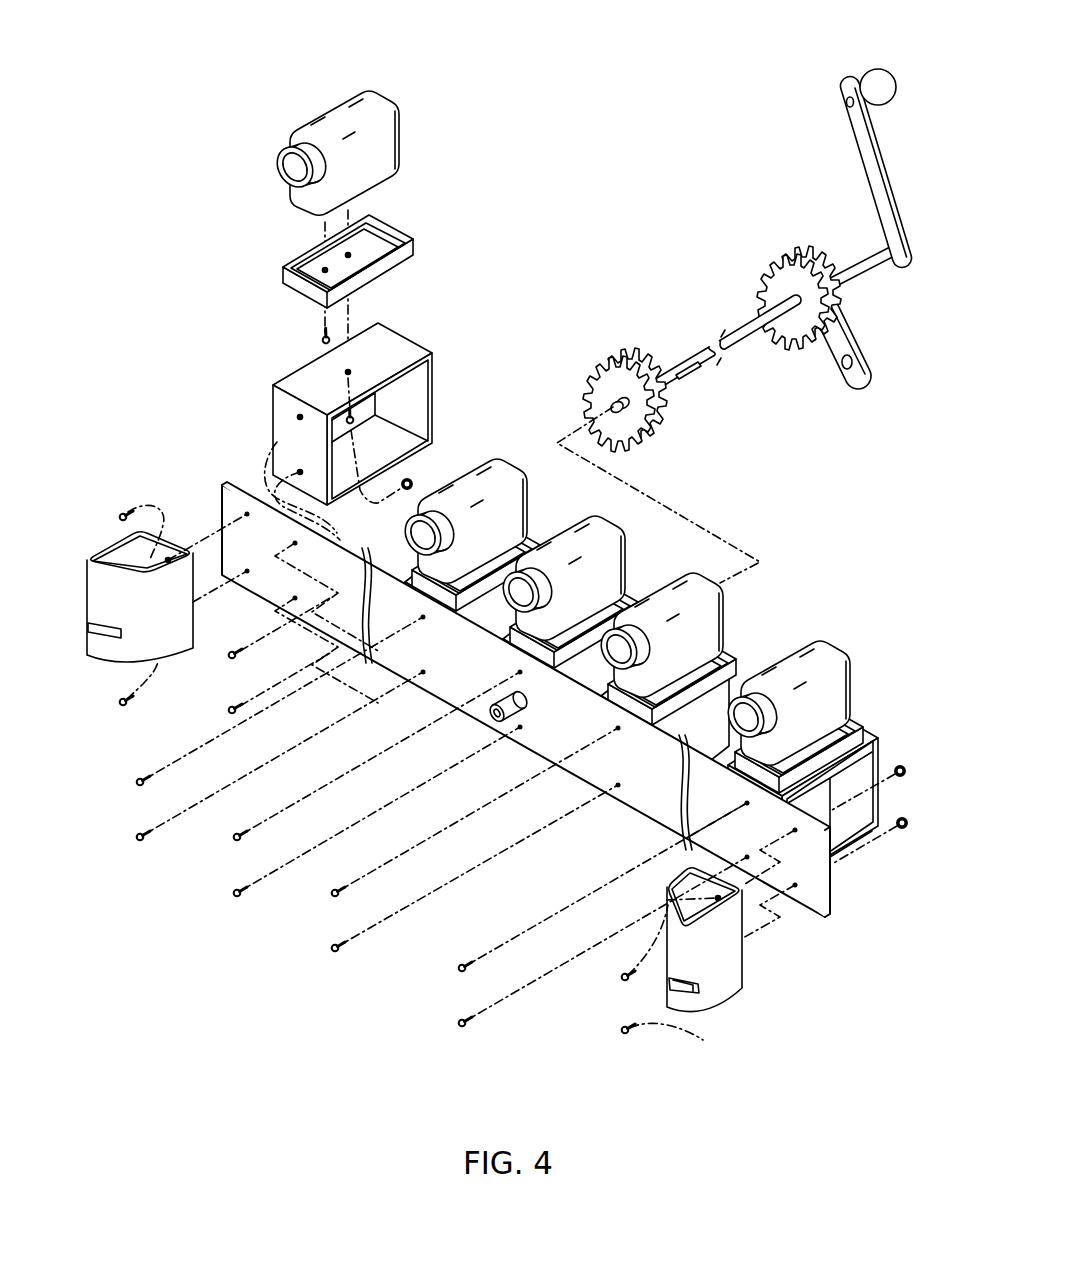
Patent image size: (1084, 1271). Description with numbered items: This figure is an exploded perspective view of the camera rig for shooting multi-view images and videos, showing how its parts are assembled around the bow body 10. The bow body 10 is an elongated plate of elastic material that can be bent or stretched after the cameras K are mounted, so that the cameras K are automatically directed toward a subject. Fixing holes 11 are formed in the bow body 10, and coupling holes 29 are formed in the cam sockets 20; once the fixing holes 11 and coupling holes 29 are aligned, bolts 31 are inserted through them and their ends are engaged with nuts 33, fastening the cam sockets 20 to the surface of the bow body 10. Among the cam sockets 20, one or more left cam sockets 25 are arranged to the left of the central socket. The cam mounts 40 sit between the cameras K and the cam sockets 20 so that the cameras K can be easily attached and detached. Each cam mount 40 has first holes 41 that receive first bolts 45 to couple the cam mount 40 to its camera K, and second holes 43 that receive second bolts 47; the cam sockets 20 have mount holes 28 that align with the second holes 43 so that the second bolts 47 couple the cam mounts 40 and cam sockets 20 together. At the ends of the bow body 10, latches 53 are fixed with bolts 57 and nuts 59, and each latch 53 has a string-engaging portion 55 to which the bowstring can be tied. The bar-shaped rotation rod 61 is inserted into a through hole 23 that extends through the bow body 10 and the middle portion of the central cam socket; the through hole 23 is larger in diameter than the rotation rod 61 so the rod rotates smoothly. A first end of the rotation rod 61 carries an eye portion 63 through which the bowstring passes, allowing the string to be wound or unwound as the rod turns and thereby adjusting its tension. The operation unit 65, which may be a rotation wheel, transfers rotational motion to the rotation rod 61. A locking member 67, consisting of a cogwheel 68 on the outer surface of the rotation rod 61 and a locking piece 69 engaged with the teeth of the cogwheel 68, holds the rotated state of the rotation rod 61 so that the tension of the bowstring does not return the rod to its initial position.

The bow body 10 is at (825, 914).
The fixing holes 11 is at (295, 541).
The cam sockets 20 is at (375, 397).
The through hole 23 is at (495, 720).
The left cam sockets 25 is at (375, 397).
The mount holes 28 is at (351, 370).
The coupling holes 29 is at (298, 414).
The bolts 31 is at (230, 658).
The nuts 33 is at (412, 481).
The cam mounts 40 is at (340, 237).
The first holes 41 is at (297, 262).
The second holes 43 is at (409, 259).
The first bolts 45 is at (322, 336).
The second bolts 47 is at (430, 438).
The latches 53 is at (729, 983).
The string-engaging portion 55 is at (692, 993).
The bolts 57 is at (620, 1030).
The nuts 59 is at (906, 820).
The rotation rod 61 is at (740, 375).
The eye portion 63 is at (688, 372).
The operation unit 65 is at (868, 168).
The locking member 67 is at (815, 375).
The cogwheel 68 is at (819, 345).
The locking piece 69 is at (851, 380).
The cameras K is at (336, 118).